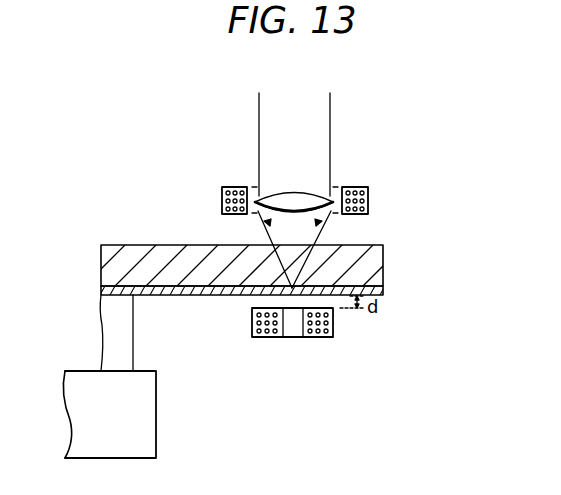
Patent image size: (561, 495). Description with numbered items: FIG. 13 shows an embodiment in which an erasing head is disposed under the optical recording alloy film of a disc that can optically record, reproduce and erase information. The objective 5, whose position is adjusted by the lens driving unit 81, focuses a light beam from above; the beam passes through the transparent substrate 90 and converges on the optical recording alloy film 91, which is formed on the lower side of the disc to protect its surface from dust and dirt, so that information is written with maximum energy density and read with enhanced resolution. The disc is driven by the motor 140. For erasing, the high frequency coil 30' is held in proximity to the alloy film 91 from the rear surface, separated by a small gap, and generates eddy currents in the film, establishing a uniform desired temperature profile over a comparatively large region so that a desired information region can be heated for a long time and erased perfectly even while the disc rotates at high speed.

The objective 5 is at (312, 192).
The lens driving unit 81 is at (368, 199).
The transparent substrate 90 is at (383, 263).
The optical recording alloy film 91 is at (383, 292).
The high frequency coil 30' is at (320, 332).
The motor 140 is at (156, 400).